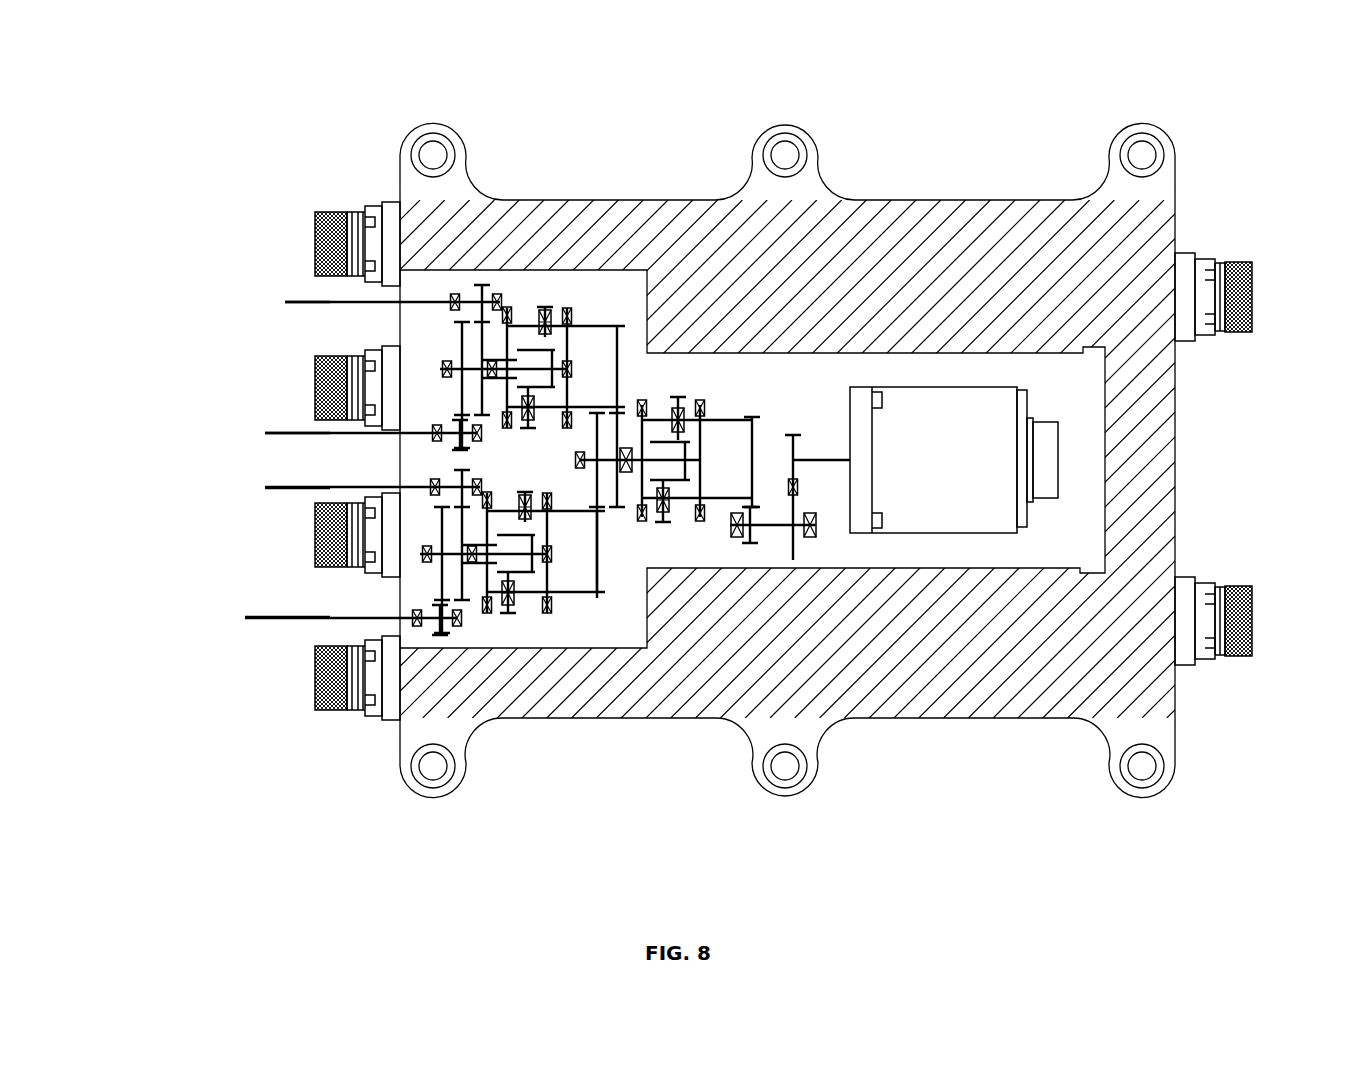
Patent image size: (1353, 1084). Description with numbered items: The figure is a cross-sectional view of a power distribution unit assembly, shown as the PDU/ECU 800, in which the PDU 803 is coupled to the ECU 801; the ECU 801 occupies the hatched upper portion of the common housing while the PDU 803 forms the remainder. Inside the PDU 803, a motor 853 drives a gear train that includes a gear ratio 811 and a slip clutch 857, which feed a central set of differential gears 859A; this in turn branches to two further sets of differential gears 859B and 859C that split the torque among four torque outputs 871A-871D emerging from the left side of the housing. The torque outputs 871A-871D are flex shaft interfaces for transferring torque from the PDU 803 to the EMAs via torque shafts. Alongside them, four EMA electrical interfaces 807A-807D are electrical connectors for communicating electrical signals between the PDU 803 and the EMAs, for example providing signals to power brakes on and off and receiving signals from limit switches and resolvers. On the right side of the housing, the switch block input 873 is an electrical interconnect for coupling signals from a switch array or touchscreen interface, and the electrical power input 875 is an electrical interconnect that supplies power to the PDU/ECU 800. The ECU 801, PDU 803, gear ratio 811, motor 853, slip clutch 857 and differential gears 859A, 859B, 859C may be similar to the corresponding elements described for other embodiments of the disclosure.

The PDU/ECU 800 is at (157, 90).
The ECU 801 is at (922, 245).
The PDU 803 is at (1113, 447).
The EMA electrical interfaces 807A-807D is at (328, 645).
The gear ratio 811 is at (750, 547).
The motor 853 is at (973, 527).
The slip clutch 857 is at (800, 563).
The differential gears 859A is at (720, 400).
The differential gears 859B is at (583, 300).
The differential gears 859C is at (576, 614).
The torque outputs 871A-871D is at (298, 305).
The switch block input 873 is at (1235, 257).
The electrical power input 875 is at (1226, 667).